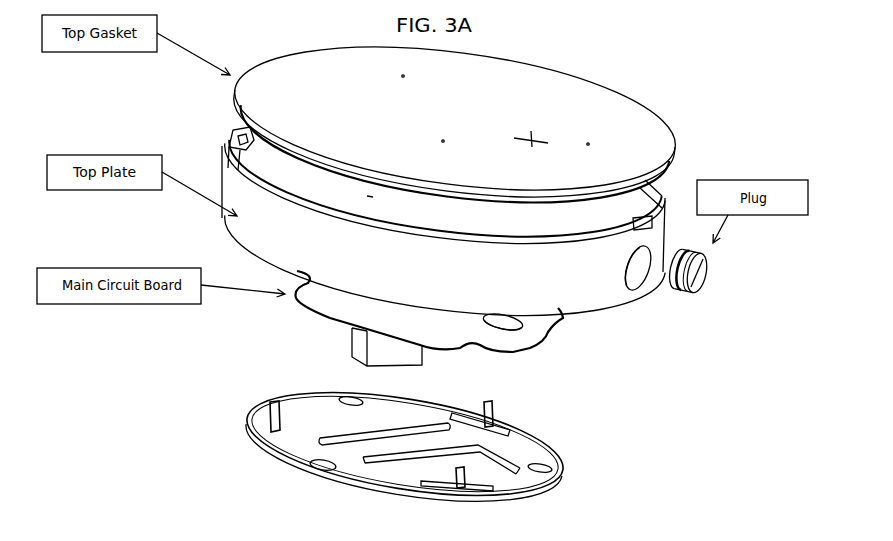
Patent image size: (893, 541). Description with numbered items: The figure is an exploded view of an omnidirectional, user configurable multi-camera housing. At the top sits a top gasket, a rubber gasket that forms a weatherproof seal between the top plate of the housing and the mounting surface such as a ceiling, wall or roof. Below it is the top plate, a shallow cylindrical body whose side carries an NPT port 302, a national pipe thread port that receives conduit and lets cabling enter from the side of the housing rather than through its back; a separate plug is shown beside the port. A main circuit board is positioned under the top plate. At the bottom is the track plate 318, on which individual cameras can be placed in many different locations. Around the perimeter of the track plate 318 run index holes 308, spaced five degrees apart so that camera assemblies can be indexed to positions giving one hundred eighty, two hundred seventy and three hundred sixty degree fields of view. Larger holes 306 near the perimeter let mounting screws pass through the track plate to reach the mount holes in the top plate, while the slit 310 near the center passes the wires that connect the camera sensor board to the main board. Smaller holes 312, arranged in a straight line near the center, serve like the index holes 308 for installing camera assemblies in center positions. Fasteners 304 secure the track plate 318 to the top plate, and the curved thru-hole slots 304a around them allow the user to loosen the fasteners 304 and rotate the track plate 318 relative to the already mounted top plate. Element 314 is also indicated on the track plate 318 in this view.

The NPT port 302 is at (640, 272).
The fasteners 304 is at (258, 424).
The curved openings/slots 304a is at (524, 429).
The larger holes 306 is at (343, 398).
The index holes 308 is at (392, 494).
The opening (slit) 310 is at (425, 428).
The smaller holes 312 is at (312, 468).
The angled rib wall 314 is at (497, 470).
The track plate 318 is at (222, 409).